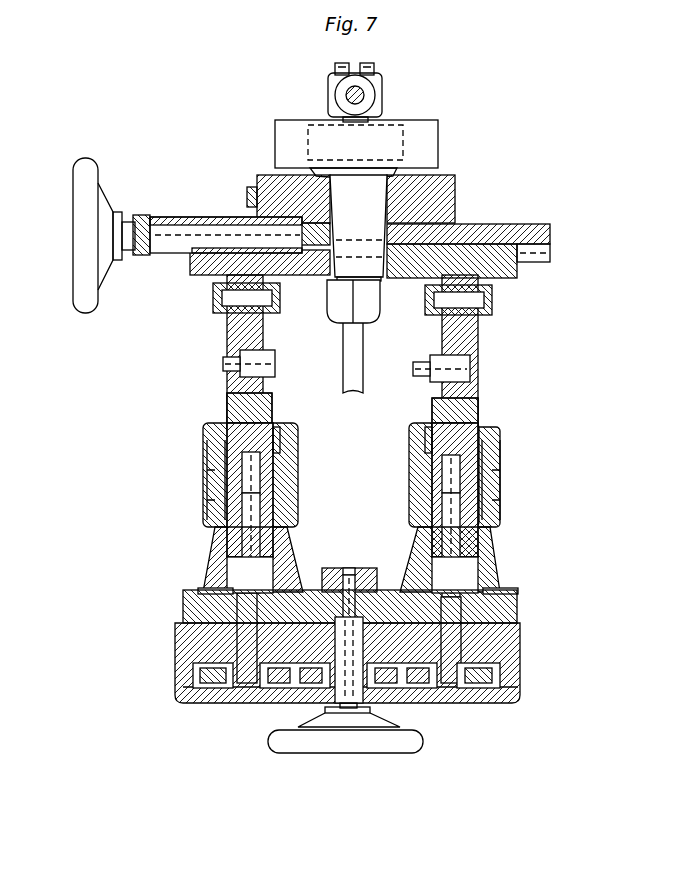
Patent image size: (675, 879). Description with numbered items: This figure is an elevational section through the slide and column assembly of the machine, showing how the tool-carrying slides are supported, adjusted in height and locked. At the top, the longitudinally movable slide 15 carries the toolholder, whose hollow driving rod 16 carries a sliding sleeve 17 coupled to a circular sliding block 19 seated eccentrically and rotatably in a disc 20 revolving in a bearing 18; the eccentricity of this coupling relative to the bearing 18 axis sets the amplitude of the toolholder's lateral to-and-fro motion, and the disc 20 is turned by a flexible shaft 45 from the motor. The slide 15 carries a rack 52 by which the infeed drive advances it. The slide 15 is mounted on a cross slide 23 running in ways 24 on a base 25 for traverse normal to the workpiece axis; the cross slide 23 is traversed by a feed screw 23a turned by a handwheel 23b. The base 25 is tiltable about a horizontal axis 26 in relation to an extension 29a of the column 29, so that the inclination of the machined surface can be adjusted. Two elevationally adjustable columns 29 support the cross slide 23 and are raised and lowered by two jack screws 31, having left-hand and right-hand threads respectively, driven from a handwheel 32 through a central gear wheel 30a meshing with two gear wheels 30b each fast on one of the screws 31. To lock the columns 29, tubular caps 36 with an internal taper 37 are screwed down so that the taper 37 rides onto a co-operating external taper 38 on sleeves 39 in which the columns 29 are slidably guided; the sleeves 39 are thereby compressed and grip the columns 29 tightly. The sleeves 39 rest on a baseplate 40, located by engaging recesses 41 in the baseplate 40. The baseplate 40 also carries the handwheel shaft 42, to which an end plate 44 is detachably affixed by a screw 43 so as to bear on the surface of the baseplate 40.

The longitudinally movable slide 15 is at (457, 192).
The driving rod 16 is at (362, 98).
The sliding sleeve 17 is at (332, 90).
The bearing 18 is at (340, 196).
The circular sliding block 19 is at (412, 130).
The disc 20 is at (440, 147).
The cross slide 23 is at (545, 236).
The feed screw 23a is at (180, 240).
The handwheel 23b is at (80, 232).
The ways 24 is at (535, 258).
The base 25 is at (233, 336).
The horizontal axis 26 is at (230, 298).
The column 29 is at (228, 400).
The extension 29a is at (258, 340).
The central gear wheel 30a is at (310, 683).
The gear wheels 30b is at (210, 685).
The jack screws 31 is at (248, 530).
The handwheel 32 is at (352, 748).
The tubular caps 36 is at (207, 440).
The internal taper 37 is at (213, 465).
The external taper 38 is at (427, 447).
The sleeves 39 is at (210, 570).
The baseplate 40 is at (518, 610).
The recesses 41 is at (205, 596).
The handwheel shaft 42 is at (355, 645).
The screw 43 is at (354, 571).
The end plate 44 is at (325, 572).
The flexible shaft 45 is at (357, 372).
The rack 52 is at (247, 197).